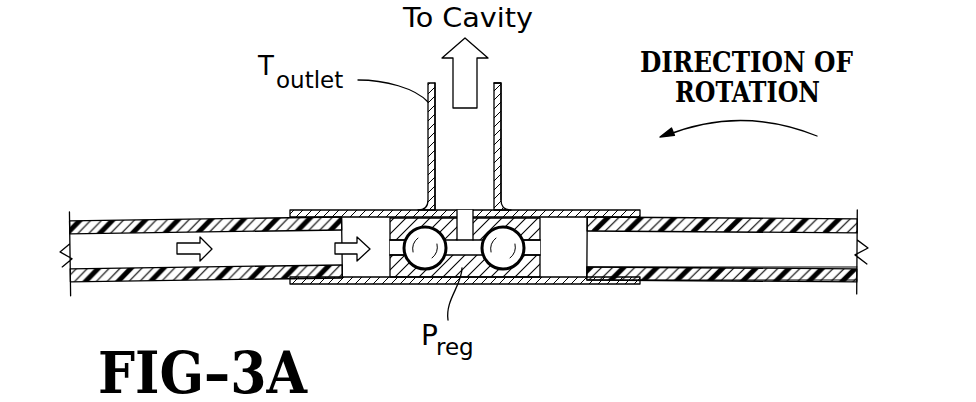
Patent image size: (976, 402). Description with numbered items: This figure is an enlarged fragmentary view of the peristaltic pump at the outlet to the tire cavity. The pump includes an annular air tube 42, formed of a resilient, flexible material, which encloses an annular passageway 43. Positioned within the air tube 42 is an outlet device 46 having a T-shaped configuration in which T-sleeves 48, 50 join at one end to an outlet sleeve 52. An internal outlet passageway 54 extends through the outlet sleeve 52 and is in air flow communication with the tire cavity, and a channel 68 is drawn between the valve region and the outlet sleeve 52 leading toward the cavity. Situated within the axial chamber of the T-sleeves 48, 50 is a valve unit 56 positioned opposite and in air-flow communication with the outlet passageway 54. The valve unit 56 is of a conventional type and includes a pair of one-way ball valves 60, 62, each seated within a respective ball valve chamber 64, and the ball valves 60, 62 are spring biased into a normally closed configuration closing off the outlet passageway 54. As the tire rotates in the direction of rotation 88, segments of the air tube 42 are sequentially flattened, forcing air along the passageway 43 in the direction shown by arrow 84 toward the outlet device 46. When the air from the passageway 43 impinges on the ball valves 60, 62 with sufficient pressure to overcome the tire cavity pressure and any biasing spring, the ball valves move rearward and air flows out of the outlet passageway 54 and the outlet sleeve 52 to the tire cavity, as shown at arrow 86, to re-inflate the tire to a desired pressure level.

The annular air tube 42 is at (110, 221).
The annular passageway 43 is at (778, 272).
The outlet device 46 is at (508, 139).
The T-sleeve 48 is at (633, 211).
The T-sleeve 50 is at (307, 211).
The outlet sleeve 52 is at (502, 108).
The outlet passageway 54 is at (443, 128).
The valve unit 56 is at (541, 281).
The one-way ball valve 60 is at (417, 243).
The one-way ball valve 62 is at (505, 243).
The ball valve chamber 64 is at (441, 262).
The channel to cavity 68 is at (462, 222).
The direction of air flow arrow 84 is at (176, 246).
The air flow to tire cavity arrow 86 is at (475, 70).
The direction of rotation 88 is at (795, 132).